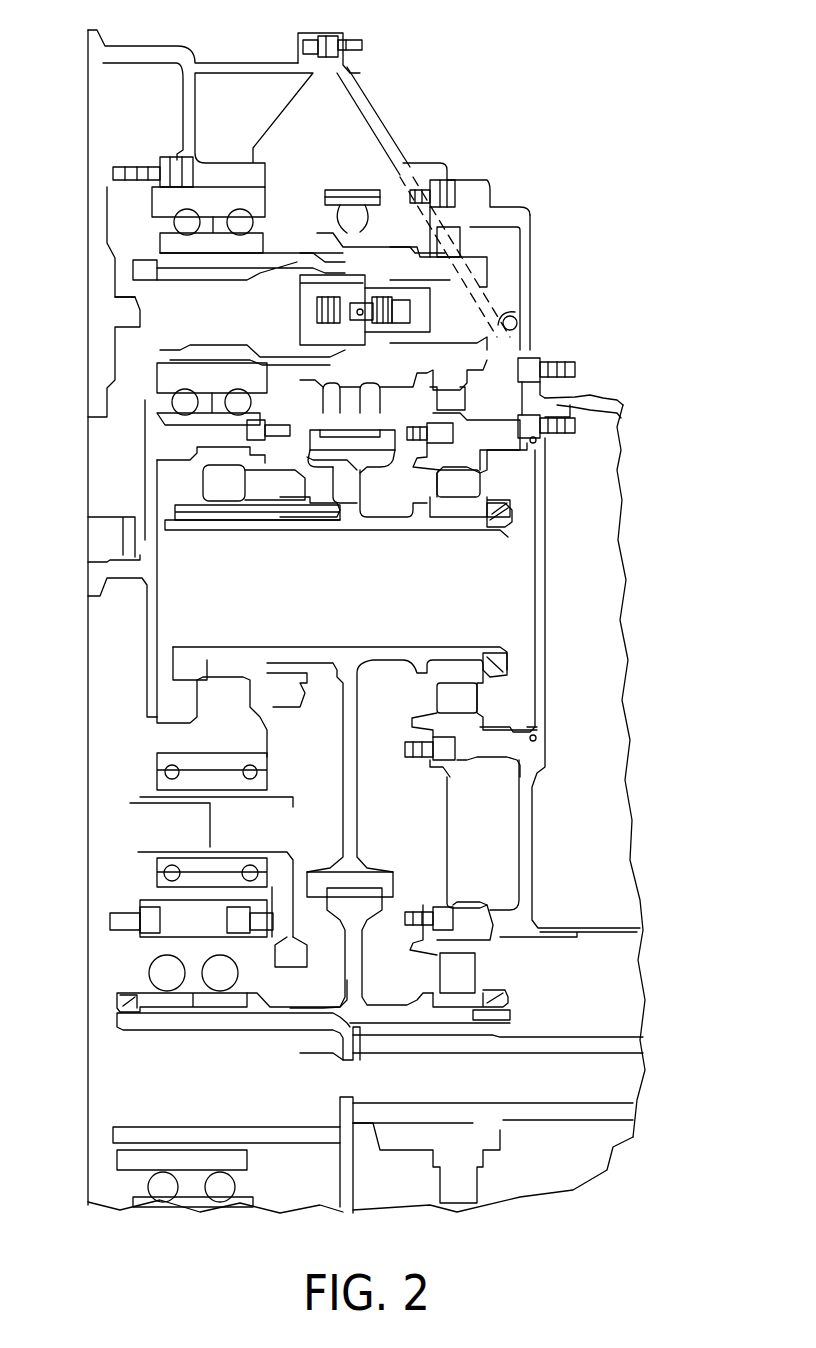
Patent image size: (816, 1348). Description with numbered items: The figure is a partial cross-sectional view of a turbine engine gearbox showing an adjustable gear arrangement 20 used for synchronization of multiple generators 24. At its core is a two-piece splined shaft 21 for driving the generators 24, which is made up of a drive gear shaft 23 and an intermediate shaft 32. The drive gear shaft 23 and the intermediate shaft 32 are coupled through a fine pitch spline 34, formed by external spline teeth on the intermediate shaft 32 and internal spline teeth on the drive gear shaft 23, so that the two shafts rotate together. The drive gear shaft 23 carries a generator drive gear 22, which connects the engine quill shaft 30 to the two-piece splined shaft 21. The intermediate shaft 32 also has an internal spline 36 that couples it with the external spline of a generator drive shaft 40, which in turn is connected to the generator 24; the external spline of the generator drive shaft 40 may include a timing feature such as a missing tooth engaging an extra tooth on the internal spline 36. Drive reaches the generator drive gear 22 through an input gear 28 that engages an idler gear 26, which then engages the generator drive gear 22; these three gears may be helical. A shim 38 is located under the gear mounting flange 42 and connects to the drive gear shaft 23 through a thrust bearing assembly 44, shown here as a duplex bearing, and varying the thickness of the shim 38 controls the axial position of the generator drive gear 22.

The adjustable gear arrangement 20 is at (647, 133).
The two-piece splined shaft 21 is at (500, 272).
The generator drive gear 22 is at (345, 190).
The drive gear shaft 23 is at (440, 272).
The generator 24 is at (93, 338).
The idler gear 26 is at (337, 483).
The input gear 28 is at (345, 993).
The engine quill shaft 30 is at (542, 1067).
The intermediate shaft 32 is at (293, 368).
The fine pitch spline 34 is at (296, 262).
The internal spline 36 is at (218, 282).
The shim 38 is at (170, 158).
The generator drive shaft 40 is at (143, 310).
The gear mounting flange 42 is at (181, 92).
The thrust bearing assembly 44 is at (128, 230).